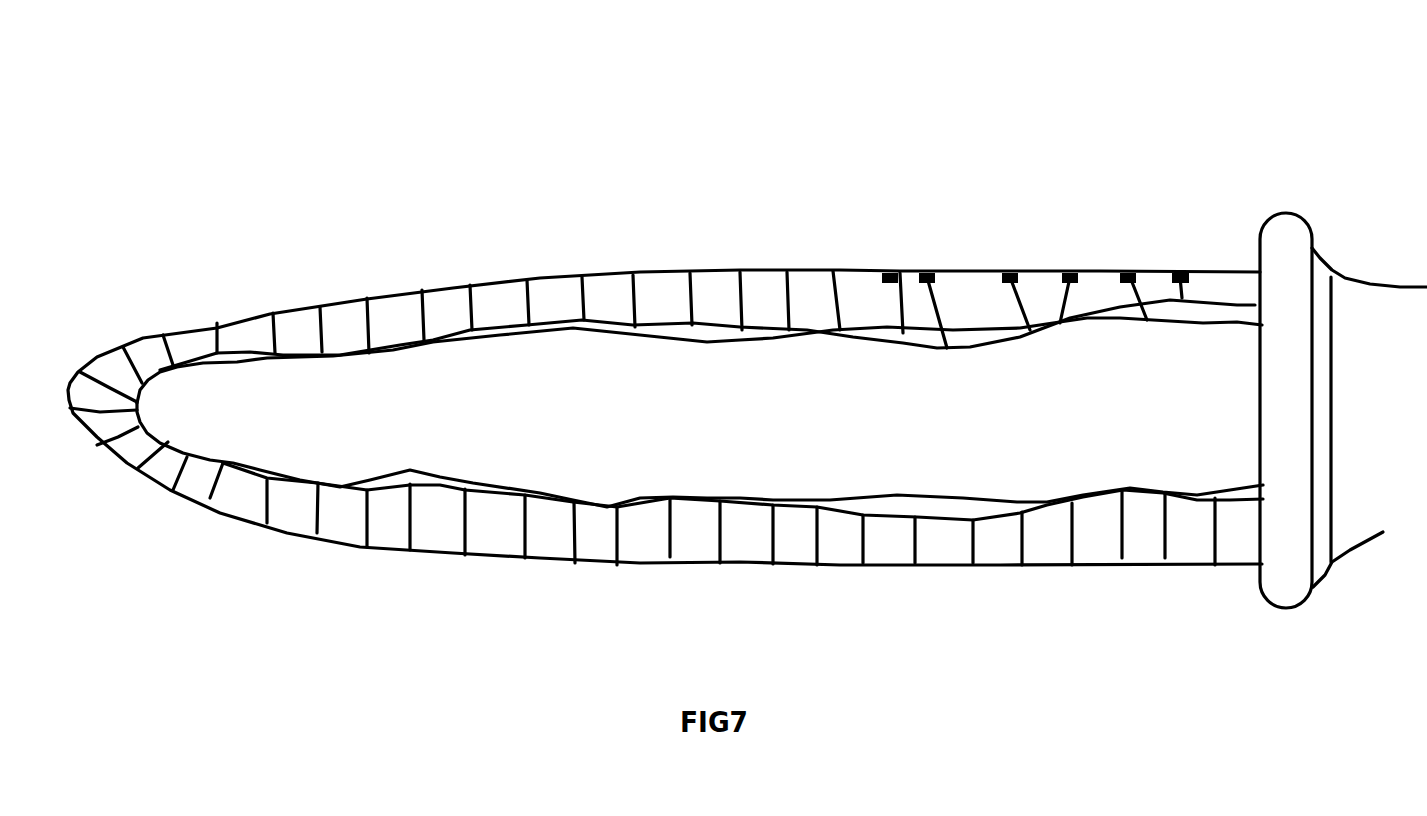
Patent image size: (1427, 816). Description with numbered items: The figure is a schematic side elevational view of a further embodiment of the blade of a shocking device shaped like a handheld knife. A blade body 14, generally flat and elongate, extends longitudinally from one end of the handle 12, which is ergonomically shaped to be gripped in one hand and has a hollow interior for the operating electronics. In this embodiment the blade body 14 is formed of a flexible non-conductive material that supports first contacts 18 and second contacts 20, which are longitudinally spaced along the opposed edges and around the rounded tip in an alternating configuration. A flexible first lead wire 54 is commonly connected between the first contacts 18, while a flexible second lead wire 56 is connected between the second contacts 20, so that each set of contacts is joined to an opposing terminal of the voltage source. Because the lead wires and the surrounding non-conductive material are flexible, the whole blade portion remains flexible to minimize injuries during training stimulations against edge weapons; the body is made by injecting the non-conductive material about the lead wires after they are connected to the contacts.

The handle 12 is at (1369, 360).
The blade body 14 is at (665, 355).
The first contacts 18 is at (1035, 226).
The second contacts 20 is at (1058, 200).
The first lead wire 54 is at (1244, 377).
The second lead wire 56 is at (700, 410).